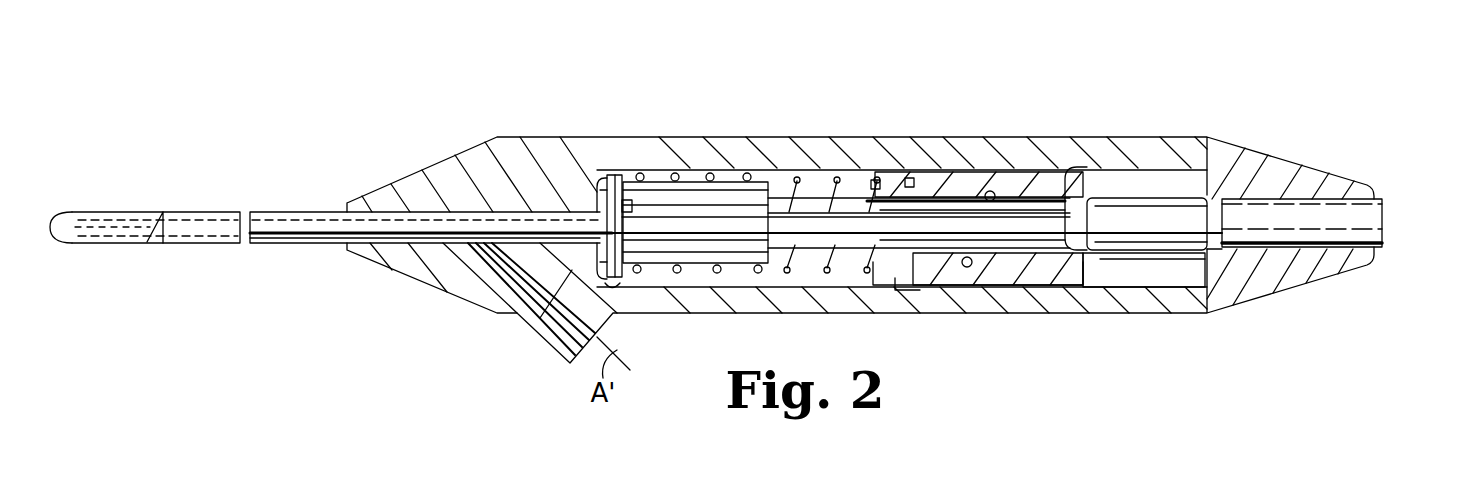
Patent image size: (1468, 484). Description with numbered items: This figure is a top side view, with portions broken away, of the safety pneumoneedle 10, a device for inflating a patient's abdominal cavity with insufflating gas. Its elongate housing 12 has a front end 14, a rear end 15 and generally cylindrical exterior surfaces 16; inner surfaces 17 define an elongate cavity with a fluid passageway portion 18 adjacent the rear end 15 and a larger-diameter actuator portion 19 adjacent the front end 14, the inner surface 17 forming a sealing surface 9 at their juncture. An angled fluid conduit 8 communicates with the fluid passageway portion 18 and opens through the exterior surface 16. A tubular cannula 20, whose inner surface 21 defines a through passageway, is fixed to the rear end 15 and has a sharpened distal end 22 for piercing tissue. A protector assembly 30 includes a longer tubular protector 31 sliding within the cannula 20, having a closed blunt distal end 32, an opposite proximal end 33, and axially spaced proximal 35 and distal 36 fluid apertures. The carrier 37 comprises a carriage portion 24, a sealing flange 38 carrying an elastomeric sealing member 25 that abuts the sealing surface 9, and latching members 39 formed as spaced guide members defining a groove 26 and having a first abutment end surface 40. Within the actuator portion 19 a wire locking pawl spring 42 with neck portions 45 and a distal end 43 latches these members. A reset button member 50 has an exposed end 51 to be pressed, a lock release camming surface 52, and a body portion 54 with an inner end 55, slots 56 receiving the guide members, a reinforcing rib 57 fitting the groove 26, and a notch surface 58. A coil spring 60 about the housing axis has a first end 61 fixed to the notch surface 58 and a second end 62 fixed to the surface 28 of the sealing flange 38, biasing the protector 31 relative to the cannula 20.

The fluid conduit 8 is at (543, 323).
The sealing surface 9 is at (615, 197).
The safety pneumoneedle 10 is at (1293, 140).
The housing 12 is at (1210, 313).
The front end 14 is at (1375, 190).
The rear end 15 is at (345, 215).
The exterior surfaces 16 is at (1050, 137).
The inner surfaces 17 is at (786, 273).
The fluid passageway portion 18 is at (533, 203).
The actuator portion 19 is at (1037, 273).
The cannula 20 is at (205, 212).
The inner surface 21 is at (305, 235).
The sharpened distal end 22 is at (142, 240).
The carriage portion 24 is at (745, 205).
The elastomeric sealing member 25 is at (603, 183).
The groove 26 is at (852, 207).
The surface 28 is at (627, 280).
The protector assembly 30 is at (617, 290).
The protector 31 is at (338, 238).
The blunt distal end 32 is at (72, 212).
The proximal end 33 is at (683, 207).
The proximal fluid aperture 35 is at (597, 197).
The distal fluid aperture 36 is at (157, 212).
The carrier 37 is at (733, 200).
The sealing flange 38 is at (622, 193).
The latching members 39 is at (897, 203).
The first abutment end surface 40 is at (1113, 253).
The locking pawl spring 42 is at (1162, 182).
The distal end 43 is at (1110, 170).
The neck portions 45 is at (1200, 195).
The reset button member 50 is at (1153, 256).
The exposed end 51 is at (1385, 219).
The lock release camming surface 52 is at (1050, 213).
The body portion 54 is at (992, 273).
The inner end 55 is at (827, 272).
The slots 56 is at (990, 193).
The reinforcing rib 57 is at (930, 207).
The notch surface 58 is at (907, 290).
The coil spring 60 is at (795, 290).
The first end 61 is at (912, 183).
The second end 62 is at (630, 207).